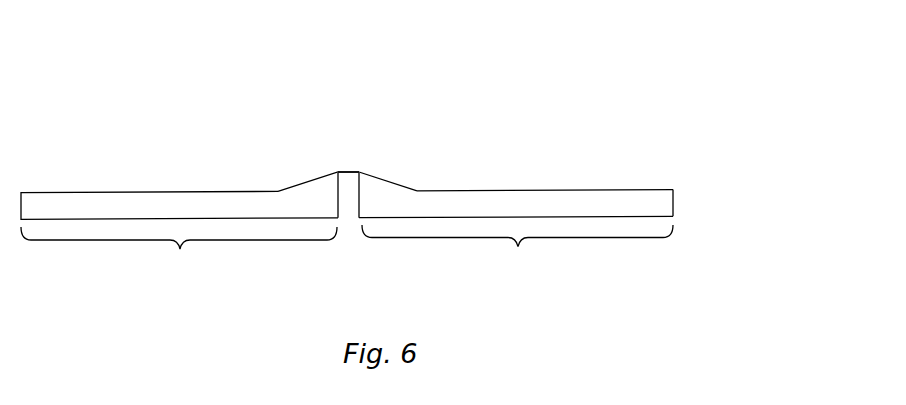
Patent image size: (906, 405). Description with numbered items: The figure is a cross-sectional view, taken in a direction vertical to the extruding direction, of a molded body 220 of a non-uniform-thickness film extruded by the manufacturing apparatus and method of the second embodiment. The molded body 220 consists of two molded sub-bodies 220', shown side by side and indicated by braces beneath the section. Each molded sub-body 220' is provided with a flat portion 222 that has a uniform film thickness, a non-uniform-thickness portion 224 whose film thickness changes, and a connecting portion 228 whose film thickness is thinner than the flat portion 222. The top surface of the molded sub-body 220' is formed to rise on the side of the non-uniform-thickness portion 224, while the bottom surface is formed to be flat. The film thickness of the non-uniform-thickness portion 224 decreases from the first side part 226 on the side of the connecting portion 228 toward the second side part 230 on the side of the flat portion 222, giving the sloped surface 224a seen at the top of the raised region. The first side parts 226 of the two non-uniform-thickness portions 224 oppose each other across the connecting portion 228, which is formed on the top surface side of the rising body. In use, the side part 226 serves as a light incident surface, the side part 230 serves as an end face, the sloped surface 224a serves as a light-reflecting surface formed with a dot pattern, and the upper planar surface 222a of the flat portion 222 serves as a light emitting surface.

The molded body 220 is at (390, 149).
The molded sub-body 220' is at (347, 256).
The flat portion 222 is at (559, 192).
The upper surface of flat plate portion 222a is at (607, 187).
The non-uniform-thickness portion 224 is at (391, 147).
The sloped surface 224a is at (398, 183).
The first side part 226 is at (357, 197).
The connecting portion 228 is at (345, 170).
The second side part 230 is at (673, 198).